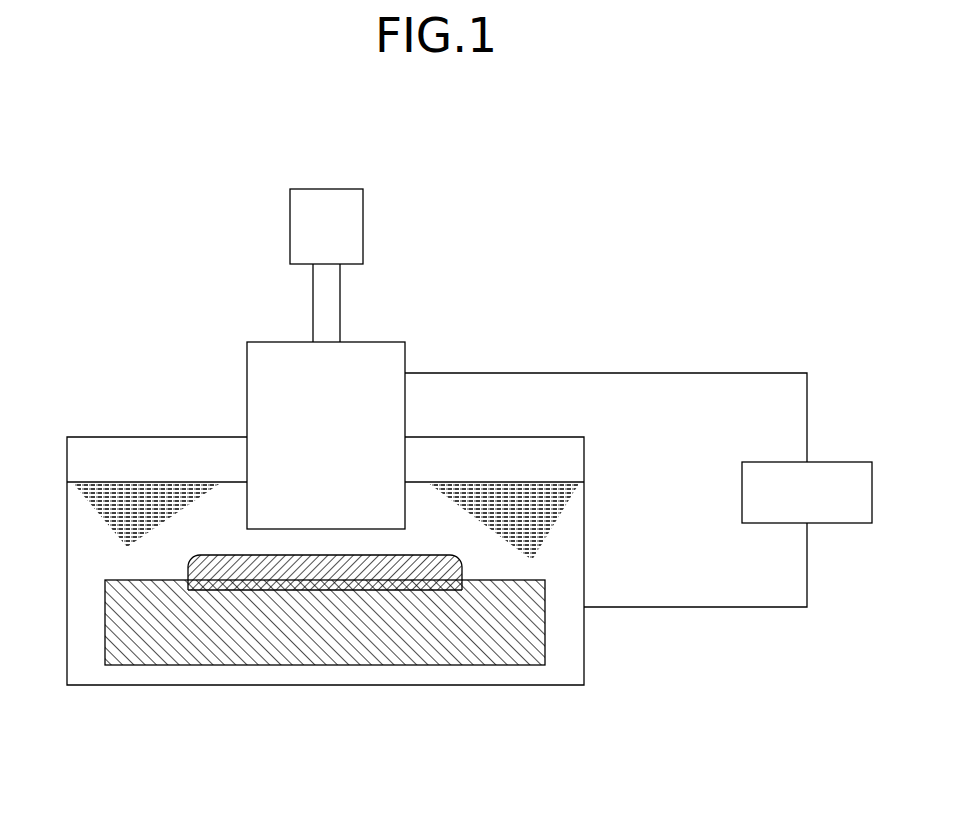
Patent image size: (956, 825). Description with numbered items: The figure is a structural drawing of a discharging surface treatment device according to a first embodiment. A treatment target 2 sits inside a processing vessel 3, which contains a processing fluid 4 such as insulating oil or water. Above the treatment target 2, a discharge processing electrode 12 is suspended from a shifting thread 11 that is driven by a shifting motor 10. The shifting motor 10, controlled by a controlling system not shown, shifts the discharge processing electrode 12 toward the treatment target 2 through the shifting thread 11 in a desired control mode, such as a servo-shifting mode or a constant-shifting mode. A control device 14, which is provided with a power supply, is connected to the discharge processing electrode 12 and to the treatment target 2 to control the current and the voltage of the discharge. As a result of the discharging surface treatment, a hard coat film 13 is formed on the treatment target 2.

The shifting motor 10 is at (355, 220).
The shifting thread 11 is at (320, 302).
The discharge processing electrode 12 is at (258, 380).
The processing vessel 3 is at (584, 540).
The processing fluid 4 is at (513, 492).
The treatment target 2 is at (423, 657).
The hard coat film 13 is at (285, 580).
The control device 14 is at (845, 460).